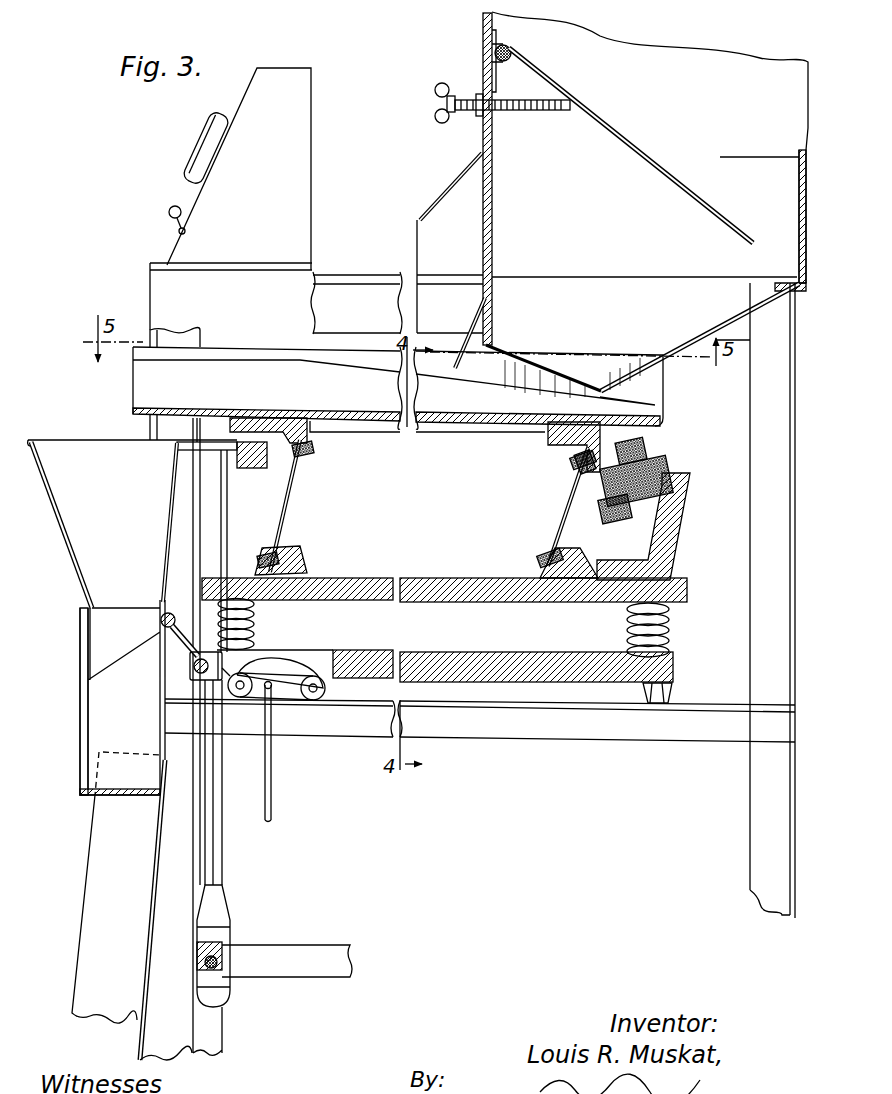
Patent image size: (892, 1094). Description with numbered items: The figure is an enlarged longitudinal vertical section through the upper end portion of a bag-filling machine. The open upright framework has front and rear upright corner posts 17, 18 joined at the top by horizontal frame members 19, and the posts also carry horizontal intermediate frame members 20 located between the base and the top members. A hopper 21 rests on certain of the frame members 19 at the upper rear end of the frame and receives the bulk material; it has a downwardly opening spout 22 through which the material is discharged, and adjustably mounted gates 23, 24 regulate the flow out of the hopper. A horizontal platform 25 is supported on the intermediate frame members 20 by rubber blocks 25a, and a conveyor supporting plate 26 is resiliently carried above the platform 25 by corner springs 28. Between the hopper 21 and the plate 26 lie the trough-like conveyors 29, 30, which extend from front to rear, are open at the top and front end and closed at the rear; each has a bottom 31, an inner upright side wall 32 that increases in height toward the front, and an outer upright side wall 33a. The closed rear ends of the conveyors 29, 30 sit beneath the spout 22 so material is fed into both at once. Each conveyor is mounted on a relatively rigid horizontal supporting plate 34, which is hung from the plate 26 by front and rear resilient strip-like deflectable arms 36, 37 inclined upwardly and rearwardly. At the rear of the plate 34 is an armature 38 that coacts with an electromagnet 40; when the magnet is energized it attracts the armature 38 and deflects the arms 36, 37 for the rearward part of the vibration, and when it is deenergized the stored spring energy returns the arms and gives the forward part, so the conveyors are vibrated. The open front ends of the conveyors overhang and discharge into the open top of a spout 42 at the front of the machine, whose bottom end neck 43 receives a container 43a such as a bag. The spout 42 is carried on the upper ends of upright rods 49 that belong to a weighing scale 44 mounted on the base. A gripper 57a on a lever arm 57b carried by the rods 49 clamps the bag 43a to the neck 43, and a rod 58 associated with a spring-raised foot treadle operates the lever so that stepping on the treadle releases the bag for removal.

The front upright corner post 17 is at (163, 1058).
The rear upright corner post 18 is at (748, 813).
The horizontal frame member 19 is at (313, 280).
The horizontal intermediate frame member 20 is at (558, 740).
The hopper 21 is at (480, 140).
The spout 22 is at (684, 342).
The gate 23 is at (701, 208).
The gate 24 is at (484, 320).
The horizontal platform 25 is at (523, 652).
The rubber block 25a is at (672, 691).
The conveyor supporting plate 26 is at (478, 582).
The corner spring 28 is at (256, 632).
The conveyor 29 is at (146, 383).
The conveyor 30 is at (195, 351).
The bottom 31 is at (338, 412).
The inner upright side wall 32 is at (277, 380).
The outer upright side wall 33a is at (358, 357).
The supporting plate 34 is at (457, 430).
The deflectable arm 36 is at (291, 499).
The deflectable arm 37 is at (563, 500).
The armature 38 is at (578, 465).
The electromagnet 40 is at (599, 516).
The spout 42 is at (68, 557).
The neck 43 is at (80, 624).
The container 43a is at (80, 696).
The scale 44 is at (247, 925).
The rod 49 is at (227, 528).
The gripper 57a is at (169, 614).
The lever arm 57b is at (183, 648).
The rod 58 is at (272, 765).